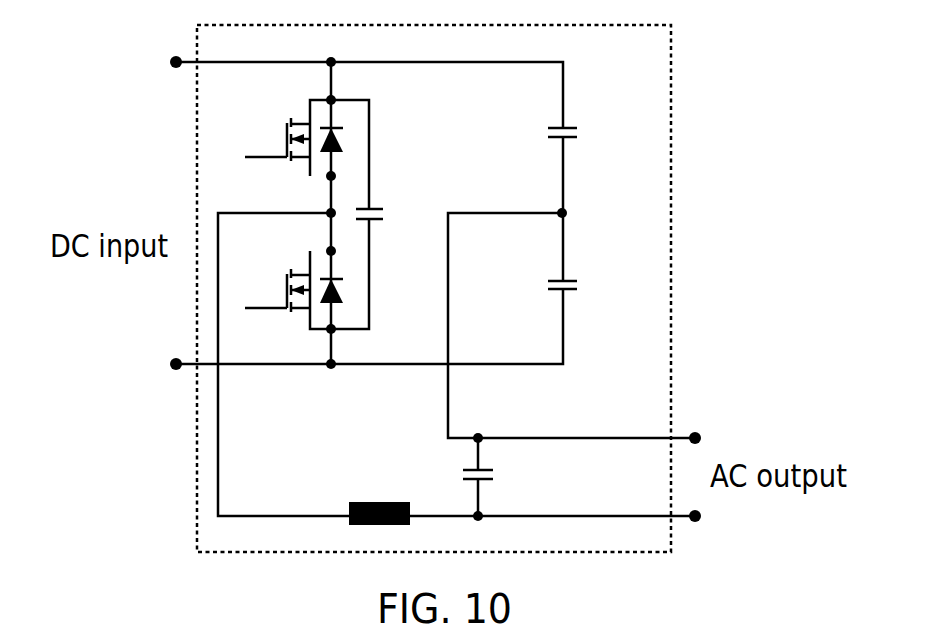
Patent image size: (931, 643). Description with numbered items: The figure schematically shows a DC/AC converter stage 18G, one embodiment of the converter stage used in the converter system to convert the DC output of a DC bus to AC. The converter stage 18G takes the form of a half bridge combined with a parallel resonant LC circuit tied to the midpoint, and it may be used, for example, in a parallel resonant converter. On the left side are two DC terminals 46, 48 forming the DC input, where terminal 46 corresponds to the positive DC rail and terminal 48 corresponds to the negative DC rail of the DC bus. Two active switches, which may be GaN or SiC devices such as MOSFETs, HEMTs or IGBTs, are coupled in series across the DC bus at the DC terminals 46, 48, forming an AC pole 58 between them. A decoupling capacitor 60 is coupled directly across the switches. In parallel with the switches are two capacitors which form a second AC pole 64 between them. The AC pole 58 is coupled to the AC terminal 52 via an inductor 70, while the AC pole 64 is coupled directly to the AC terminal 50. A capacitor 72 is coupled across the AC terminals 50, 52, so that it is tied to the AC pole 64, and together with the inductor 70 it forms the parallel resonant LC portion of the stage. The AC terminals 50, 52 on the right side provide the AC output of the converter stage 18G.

The converter stage 18G is at (672, 45).
The DC terminal 46 is at (176, 56).
The DC terminal 48 is at (176, 358).
The AC terminal 50 is at (695, 432).
The AC terminal 52 is at (695, 522).
The AC pole 58 is at (328, 212).
The decoupling capacitor 60 is at (381, 208).
The AC pole 64 is at (559, 212).
The inductor 70 is at (375, 503).
The capacitor 72 is at (496, 468).